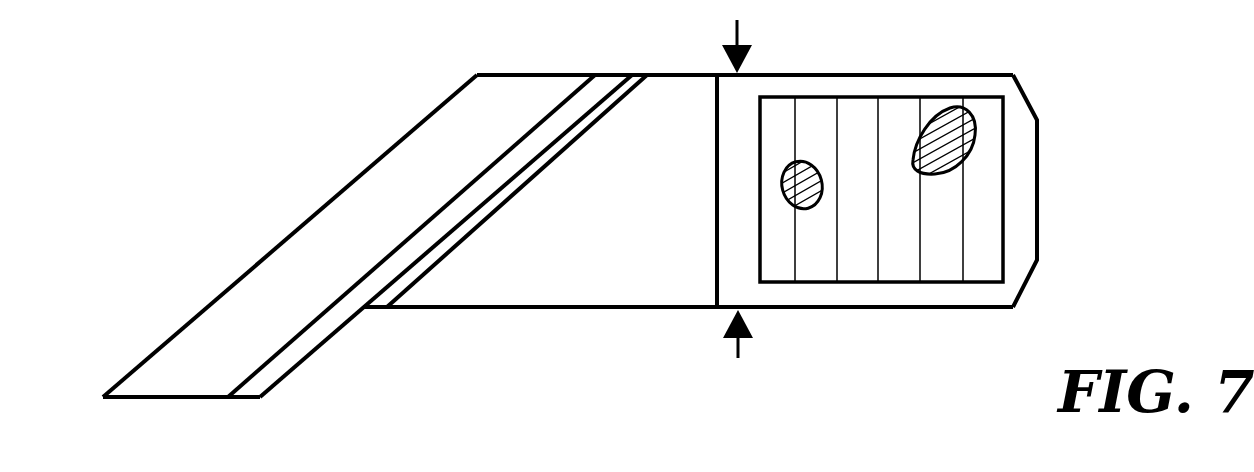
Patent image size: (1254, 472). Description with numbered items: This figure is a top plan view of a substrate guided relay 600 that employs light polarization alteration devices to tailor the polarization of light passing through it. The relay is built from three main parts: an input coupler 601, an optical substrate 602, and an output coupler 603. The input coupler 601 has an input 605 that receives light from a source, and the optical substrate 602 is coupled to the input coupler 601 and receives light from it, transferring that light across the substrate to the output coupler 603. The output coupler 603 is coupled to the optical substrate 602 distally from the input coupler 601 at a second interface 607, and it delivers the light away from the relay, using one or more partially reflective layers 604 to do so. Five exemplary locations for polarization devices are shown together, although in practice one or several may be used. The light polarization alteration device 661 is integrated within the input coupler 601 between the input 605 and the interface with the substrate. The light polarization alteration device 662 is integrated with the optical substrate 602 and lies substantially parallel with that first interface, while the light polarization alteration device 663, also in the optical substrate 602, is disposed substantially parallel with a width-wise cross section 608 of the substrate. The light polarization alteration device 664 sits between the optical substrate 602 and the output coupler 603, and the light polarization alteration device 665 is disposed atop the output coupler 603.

The substrate guided relay 600 is at (190, 202).
The input coupler 601 is at (362, 215).
The optical substrate 602 is at (588, 308).
The output coupler 603 is at (895, 283).
The partially reflective layers 604 is at (797, 245).
The input 605 is at (163, 400).
The second interface 607 is at (1018, 202).
The width-wise cross section 608 is at (740, 343).
The light polarization alteration device 661 is at (332, 307).
The light polarization alteration device 662 is at (502, 208).
The light polarization alteration device 663 is at (714, 263).
The light polarization alteration device 664 is at (802, 163).
The light polarization alteration device 665 is at (948, 107).